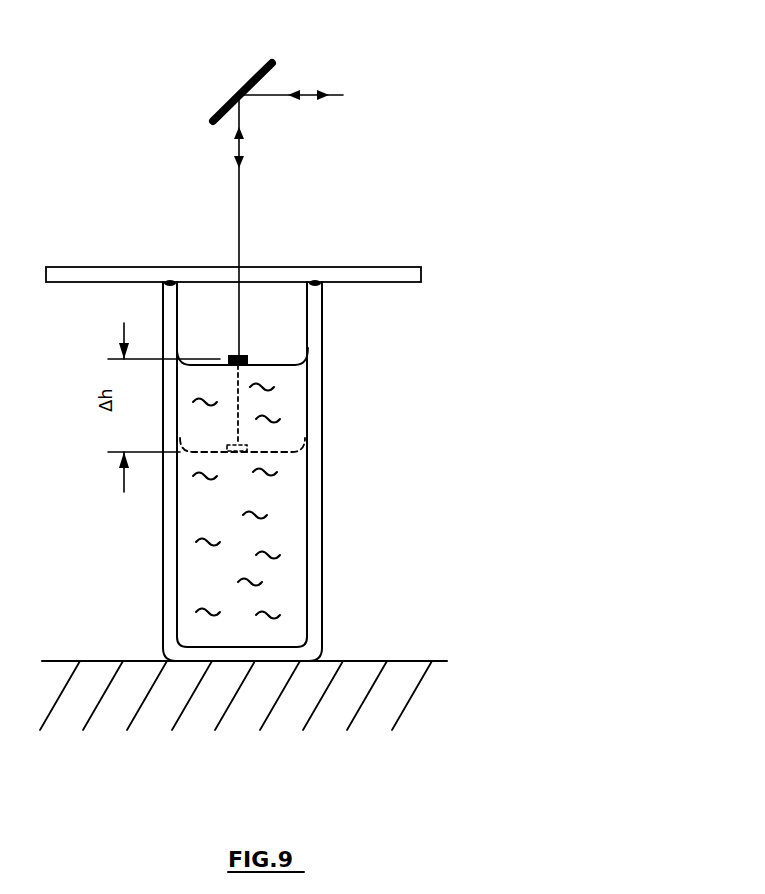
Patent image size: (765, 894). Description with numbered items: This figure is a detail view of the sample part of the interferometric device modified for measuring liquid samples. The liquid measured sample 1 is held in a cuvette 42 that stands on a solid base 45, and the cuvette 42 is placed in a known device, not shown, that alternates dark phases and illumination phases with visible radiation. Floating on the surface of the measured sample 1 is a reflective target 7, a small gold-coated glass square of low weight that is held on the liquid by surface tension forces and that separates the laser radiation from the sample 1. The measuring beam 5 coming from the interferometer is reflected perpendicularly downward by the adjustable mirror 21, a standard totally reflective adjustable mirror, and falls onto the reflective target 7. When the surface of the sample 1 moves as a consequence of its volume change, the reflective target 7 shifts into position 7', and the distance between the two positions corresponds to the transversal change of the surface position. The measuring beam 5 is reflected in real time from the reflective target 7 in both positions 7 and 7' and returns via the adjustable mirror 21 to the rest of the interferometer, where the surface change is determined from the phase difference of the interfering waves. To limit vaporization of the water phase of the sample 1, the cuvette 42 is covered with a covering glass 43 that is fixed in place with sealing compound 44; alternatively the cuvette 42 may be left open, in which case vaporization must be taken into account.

The adjustable mirror 21 is at (248, 73).
The measuring beam 5 is at (310, 94).
The covering glass 43 is at (393, 273).
The sealing compound 44 is at (164, 283).
The cuvette 42 is at (313, 568).
The measured sample 1 is at (277, 513).
The reflective target 7 is at (290, 277).
The position of reflective target 7' is at (296, 408).
The solid base 45 is at (358, 661).